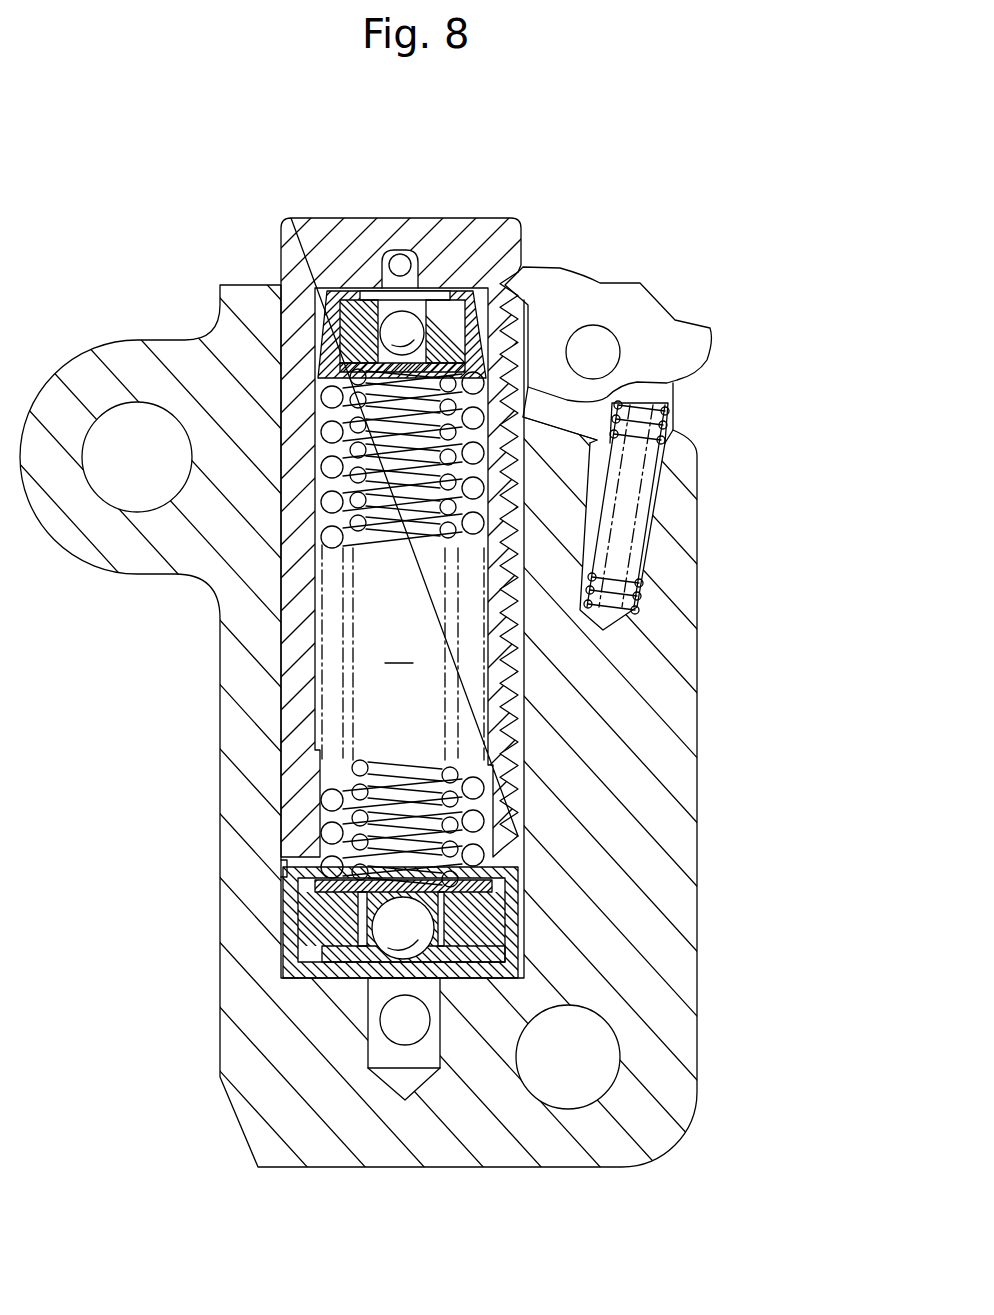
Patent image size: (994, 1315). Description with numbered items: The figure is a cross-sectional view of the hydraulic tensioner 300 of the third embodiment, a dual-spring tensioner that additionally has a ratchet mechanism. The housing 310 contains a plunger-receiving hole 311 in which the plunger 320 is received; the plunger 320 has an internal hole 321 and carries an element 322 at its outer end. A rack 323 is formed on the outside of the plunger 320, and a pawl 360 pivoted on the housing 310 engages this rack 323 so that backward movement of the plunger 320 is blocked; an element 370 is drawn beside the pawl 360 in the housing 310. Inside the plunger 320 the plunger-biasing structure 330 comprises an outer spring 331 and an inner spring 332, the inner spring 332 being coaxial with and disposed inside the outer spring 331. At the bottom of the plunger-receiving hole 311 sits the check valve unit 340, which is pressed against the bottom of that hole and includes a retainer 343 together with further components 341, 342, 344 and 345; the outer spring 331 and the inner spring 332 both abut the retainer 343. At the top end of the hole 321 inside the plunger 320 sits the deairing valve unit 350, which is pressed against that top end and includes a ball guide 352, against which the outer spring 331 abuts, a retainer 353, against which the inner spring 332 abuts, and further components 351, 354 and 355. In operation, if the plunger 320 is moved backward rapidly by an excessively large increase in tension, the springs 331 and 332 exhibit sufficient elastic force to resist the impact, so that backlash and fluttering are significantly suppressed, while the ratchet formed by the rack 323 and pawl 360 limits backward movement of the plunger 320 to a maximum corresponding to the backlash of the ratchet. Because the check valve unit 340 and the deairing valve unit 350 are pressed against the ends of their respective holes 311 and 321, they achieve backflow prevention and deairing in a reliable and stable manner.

The tensioner 300 is at (527, 188).
The housing 310 is at (497, 690).
The plunger-receiving hole 311 is at (283, 862).
The plunger 320 is at (497, 510).
The hole inside the plunger 321 is at (482, 734).
The plunger head hole 322 is at (400, 254).
The rack 323 is at (505, 675).
The plunger-biasing structure 330 is at (270, 628).
The outer spring 331 is at (330, 802).
The inner spring 332 is at (353, 767).
The check valve unit 340 is at (504, 917).
The valve cup 341 is at (487, 917).
The check ball 342 is at (434, 930).
The retainer 343 is at (470, 888).
The valve seat plate 344 is at (457, 962).
The ball retainer 345 is at (444, 902).
The deairing valve unit 350 is at (323, 265).
The valve body 351 is at (370, 318).
The ball guide 352 is at (398, 333).
The retainer 353 is at (340, 358).
The top plate 354 is at (385, 295).
The bottom plate 355 is at (382, 366).
The pawl 360 is at (570, 293).
The pawl spring 370 is at (637, 577).